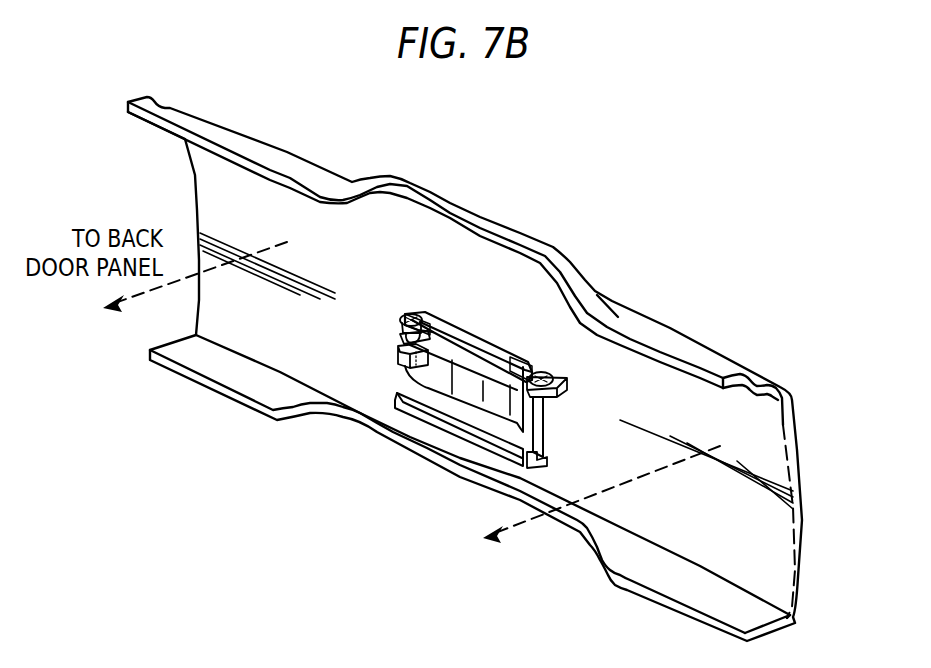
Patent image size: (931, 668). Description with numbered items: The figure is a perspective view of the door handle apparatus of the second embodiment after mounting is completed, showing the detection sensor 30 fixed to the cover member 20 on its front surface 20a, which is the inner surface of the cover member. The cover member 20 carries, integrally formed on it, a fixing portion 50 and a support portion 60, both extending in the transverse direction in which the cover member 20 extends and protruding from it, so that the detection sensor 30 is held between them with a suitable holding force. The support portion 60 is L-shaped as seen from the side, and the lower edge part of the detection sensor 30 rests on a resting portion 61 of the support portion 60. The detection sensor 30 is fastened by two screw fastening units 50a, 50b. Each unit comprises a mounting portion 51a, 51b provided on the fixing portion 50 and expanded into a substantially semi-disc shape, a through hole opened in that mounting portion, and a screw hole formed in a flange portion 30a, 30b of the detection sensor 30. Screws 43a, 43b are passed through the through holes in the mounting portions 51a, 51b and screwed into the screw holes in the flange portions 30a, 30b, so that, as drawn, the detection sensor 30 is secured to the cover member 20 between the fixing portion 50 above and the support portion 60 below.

The cover member 20 is at (658, 340).
The front surface of the cover member 20a is at (710, 538).
The detection sensor 30 is at (462, 407).
The flange portion of the detection sensor 30a is at (548, 402).
The flange portion of the detection sensor 30b is at (400, 346).
The screw 43a is at (552, 377).
The screw 43b is at (404, 316).
The fixing portion 50 is at (468, 332).
The screw fastening unit 50a is at (542, 362).
The screw fastening unit 50b is at (412, 309).
The mounting portion 51a is at (562, 396).
The mounting portion 51b is at (402, 334).
The support portion 60 is at (485, 443).
The resting portion 61 is at (548, 461).